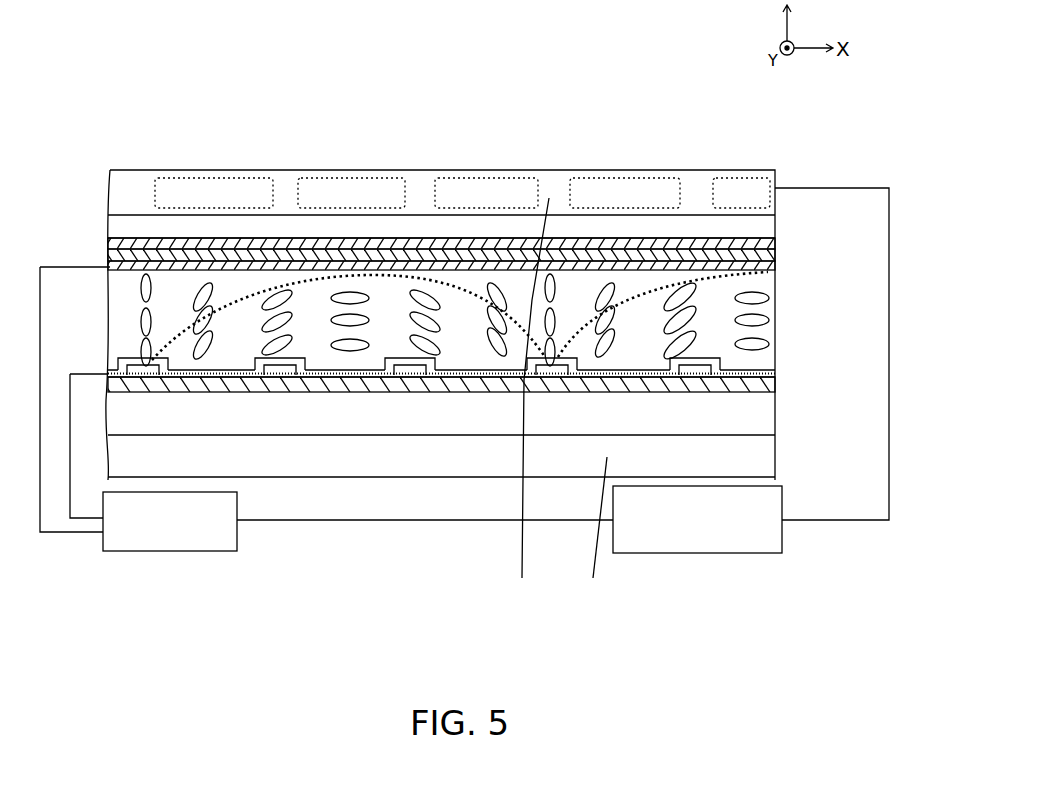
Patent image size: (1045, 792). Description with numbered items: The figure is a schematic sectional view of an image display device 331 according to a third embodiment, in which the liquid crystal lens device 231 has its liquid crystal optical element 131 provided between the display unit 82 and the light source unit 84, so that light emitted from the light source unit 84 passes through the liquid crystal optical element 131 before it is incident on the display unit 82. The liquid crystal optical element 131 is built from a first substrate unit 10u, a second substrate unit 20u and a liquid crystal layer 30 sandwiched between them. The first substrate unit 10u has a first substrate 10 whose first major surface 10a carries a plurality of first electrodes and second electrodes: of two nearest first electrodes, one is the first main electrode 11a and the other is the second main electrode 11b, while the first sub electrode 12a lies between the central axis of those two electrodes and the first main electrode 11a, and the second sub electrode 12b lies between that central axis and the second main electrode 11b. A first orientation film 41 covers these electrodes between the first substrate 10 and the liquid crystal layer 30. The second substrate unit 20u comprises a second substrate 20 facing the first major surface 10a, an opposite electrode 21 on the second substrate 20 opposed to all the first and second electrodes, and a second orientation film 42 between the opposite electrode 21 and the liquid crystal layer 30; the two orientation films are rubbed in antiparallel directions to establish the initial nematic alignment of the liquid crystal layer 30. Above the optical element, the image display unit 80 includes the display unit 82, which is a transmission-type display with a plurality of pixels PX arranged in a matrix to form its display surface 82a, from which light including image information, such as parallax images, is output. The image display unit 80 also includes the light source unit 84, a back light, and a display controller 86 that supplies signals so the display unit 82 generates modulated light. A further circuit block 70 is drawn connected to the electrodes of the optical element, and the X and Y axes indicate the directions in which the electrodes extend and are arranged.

The image display device 331 is at (457, 260).
The liquid crystal lens device 231 is at (91, 222).
The pixels PX is at (484, 190).
The display surface 82a is at (670, 171).
The second substrate 20 is at (756, 238).
The opposite electrode 21 is at (758, 254).
The second orientation film 42 is at (468, 278).
The second substrate unit 20u is at (496, 253).
The liquid crystal layer 30 is at (745, 307).
The first major surface 10a is at (760, 348).
The first orientation film 41 is at (756, 373).
The first substrate 10 is at (758, 388).
The first substrate unit 10u is at (496, 387).
The liquid crystal optical element 131 is at (795, 410).
The first main electrode 11a is at (146, 381).
The first sub electrode 12a is at (268, 386).
The second sub electrode 12b is at (413, 390).
The second main electrode 11b is at (557, 383).
The drive circuit 70 is at (172, 552).
The display unit 82 is at (530, 407).
The light source unit 84 is at (597, 537).
The display controller 86 is at (697, 551).
The image display unit 80 is at (647, 426).